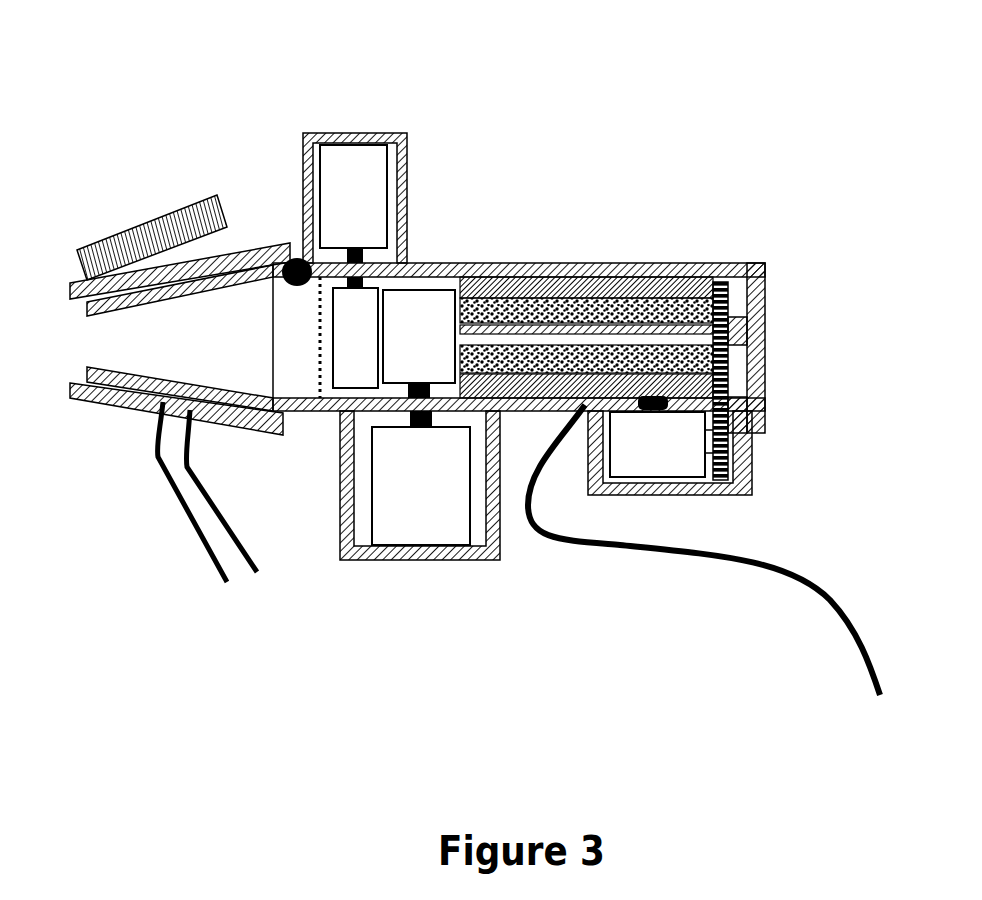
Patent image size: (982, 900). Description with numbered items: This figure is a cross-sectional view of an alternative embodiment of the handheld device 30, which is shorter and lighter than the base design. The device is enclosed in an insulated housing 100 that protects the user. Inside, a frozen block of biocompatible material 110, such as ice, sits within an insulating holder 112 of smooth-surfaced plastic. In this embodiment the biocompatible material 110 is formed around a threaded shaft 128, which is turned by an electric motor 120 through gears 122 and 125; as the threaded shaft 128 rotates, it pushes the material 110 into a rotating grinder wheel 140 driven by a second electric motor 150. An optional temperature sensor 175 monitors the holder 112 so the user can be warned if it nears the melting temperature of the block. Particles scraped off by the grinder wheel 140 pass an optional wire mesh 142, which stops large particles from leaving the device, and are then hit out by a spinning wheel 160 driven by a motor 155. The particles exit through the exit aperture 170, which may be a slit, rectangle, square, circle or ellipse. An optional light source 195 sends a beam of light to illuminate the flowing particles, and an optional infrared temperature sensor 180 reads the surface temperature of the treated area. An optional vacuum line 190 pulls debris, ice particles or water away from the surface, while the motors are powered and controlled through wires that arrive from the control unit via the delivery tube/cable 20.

The handheld device 30 is at (655, 165).
The housing 100 is at (608, 262).
The insulating holder 112 is at (539, 272).
The biocompatible material 110 is at (627, 305).
The threaded shaft 128 is at (731, 300).
The gear 125 is at (763, 272).
The gear 122 is at (765, 398).
The electric motor 120 is at (685, 460).
The temperature sensor 175 is at (657, 403).
The motor 155 is at (382, 214).
The spinning wheel 160 is at (368, 293).
The grinder wheel 140 is at (445, 357).
The wire mesh 142 is at (318, 362).
The electric motor 150 is at (445, 498).
The light source 195 is at (299, 262).
The infrared temperature sensor 180 is at (158, 222).
The exit aperture 170 is at (86, 343).
The vacuum line 190 is at (238, 570).
The delivery tube/cable 20 is at (543, 533).